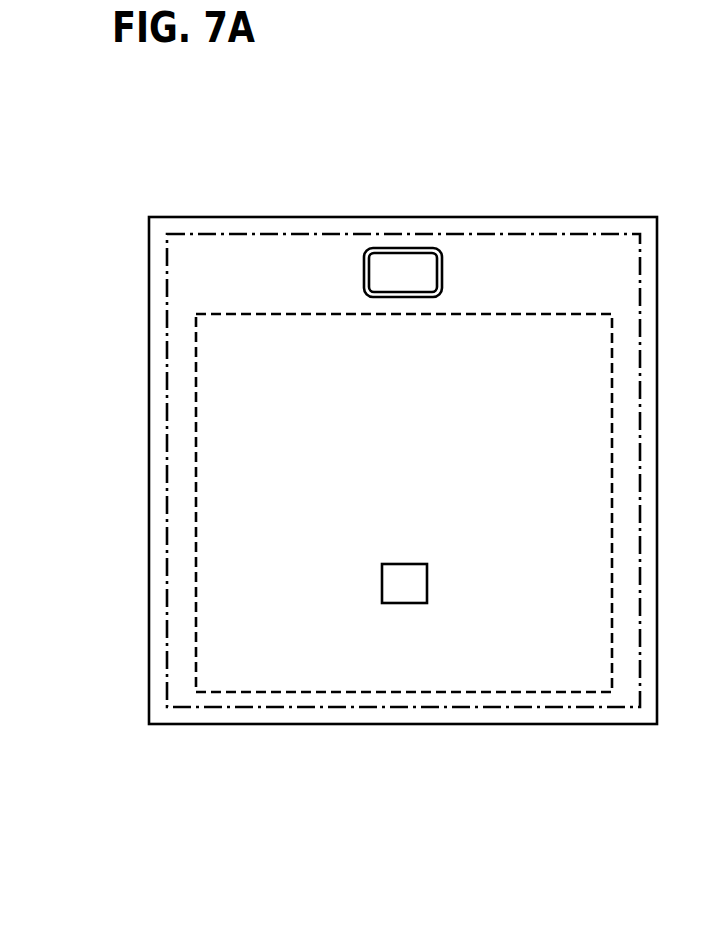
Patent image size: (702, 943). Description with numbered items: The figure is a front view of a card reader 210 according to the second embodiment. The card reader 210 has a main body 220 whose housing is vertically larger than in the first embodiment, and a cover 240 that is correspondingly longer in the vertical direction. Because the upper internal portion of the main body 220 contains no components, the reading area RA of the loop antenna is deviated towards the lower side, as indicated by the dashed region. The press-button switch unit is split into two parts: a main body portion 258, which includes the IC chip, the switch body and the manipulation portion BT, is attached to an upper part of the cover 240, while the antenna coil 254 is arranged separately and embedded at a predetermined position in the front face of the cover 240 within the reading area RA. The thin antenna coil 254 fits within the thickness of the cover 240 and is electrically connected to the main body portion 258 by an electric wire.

The card reader 210 is at (606, 164).
The main body 220 is at (298, 233).
The cover 240 is at (373, 216).
The reading area RA is at (255, 314).
The main body portion 258 is at (442, 272).
The button BT is at (410, 270).
The antenna coil 254 is at (403, 603).